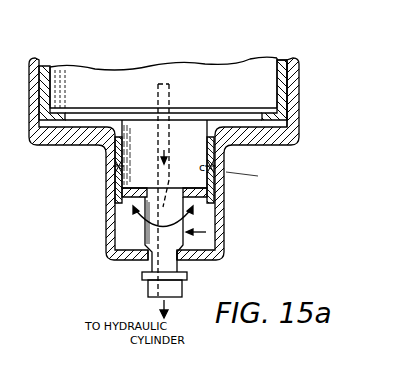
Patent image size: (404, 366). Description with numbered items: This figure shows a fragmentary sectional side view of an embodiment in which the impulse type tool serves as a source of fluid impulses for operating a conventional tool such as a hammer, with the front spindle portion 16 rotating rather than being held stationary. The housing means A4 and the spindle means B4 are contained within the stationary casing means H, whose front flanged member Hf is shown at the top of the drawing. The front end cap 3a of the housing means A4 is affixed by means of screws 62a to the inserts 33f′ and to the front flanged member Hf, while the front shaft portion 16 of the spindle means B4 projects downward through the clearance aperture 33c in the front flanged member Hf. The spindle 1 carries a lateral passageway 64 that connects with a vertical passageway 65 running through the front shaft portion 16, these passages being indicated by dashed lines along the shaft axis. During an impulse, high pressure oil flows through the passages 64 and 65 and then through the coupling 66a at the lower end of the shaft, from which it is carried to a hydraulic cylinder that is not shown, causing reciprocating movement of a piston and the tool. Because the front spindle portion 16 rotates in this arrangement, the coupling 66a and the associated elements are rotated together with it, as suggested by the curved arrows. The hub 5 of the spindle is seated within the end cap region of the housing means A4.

The stationary casing means H is at (30, 88).
The front flanged member Hf is at (293, 77).
The hub 5 is at (50, 68).
The housing means A4 is at (283, 59).
The shaft 1 is at (222, 68).
The front end cap 3a is at (93, 115).
The lateral passageway 64 is at (158, 85).
The vertical passageway 65 is at (170, 97).
The front shaft portion 16 is at (170, 190).
The inserts 33f′ is at (117, 196).
The spindle means B4 is at (225, 233).
The screws 62a is at (261, 176).
The clearance aperture 33c is at (147, 262).
The coupling 66a is at (149, 290).